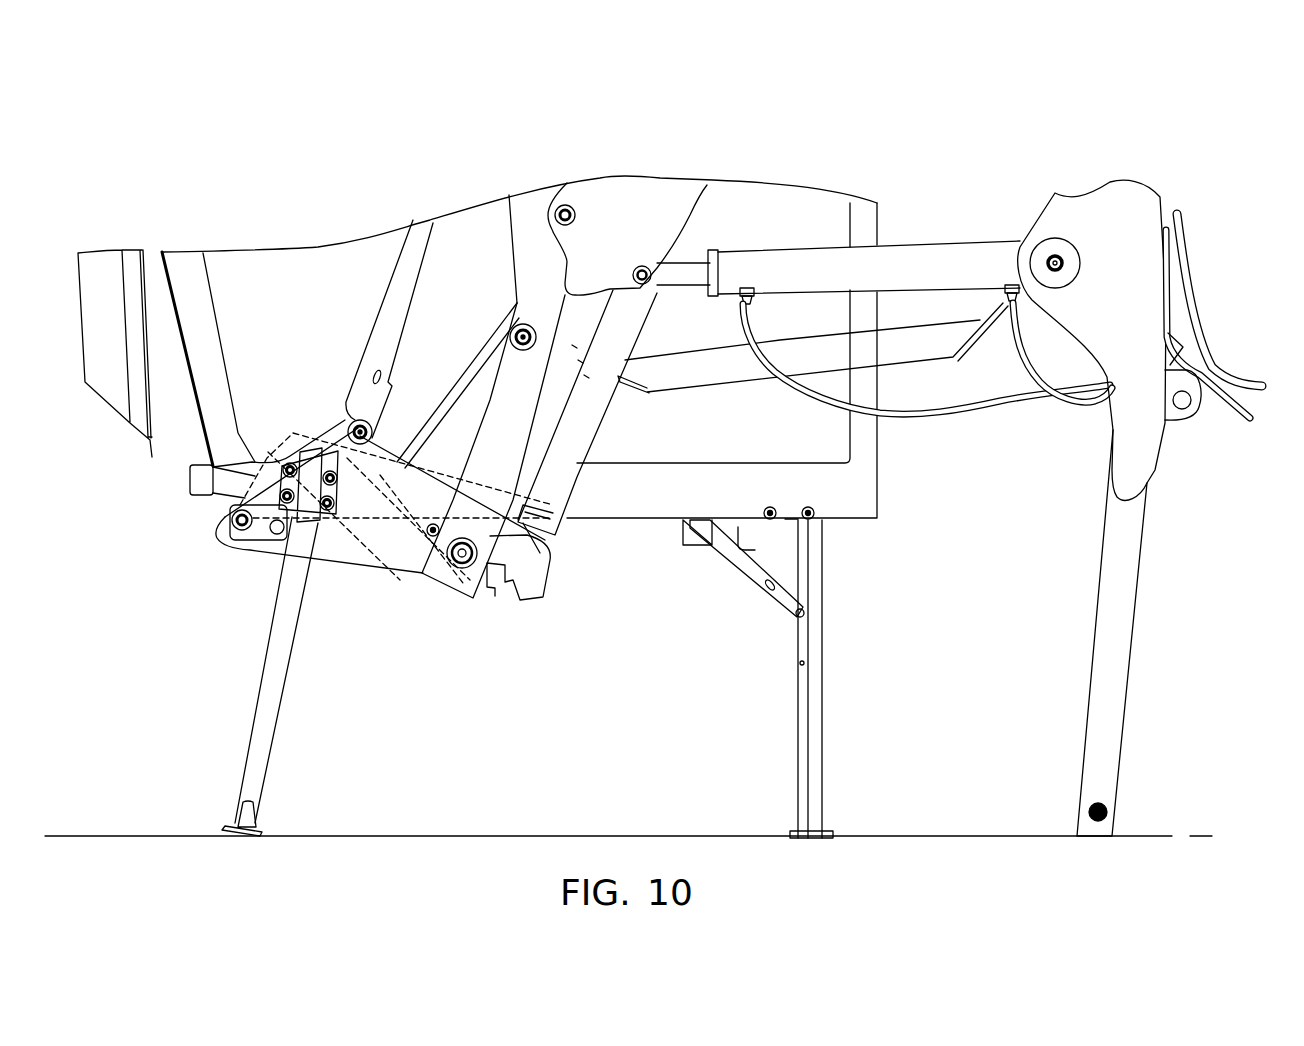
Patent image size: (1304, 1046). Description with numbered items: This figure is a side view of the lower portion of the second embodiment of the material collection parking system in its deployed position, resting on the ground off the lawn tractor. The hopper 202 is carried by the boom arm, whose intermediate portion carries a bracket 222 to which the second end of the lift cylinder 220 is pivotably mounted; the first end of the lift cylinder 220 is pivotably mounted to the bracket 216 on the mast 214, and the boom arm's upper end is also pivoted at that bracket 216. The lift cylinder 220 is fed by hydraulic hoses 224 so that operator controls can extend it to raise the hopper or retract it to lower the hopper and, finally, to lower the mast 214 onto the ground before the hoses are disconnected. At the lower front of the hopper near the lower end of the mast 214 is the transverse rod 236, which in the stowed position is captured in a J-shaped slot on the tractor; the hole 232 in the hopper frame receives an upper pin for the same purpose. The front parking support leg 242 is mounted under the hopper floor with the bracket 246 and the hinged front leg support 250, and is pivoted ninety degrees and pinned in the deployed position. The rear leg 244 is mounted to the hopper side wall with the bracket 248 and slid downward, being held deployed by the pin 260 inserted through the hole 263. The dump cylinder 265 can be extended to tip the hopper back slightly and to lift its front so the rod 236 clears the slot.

The hopper 202 is at (320, 282).
The bracket 222 is at (622, 215).
The lift cylinder 220 is at (908, 260).
The bracket 216 is at (1140, 248).
The pin 260 is at (296, 440).
The bracket 248 is at (318, 440).
The hydraulic hose 224 is at (930, 400).
The hole 232 is at (1182, 415).
The hole 263 is at (282, 568).
The rear leg 244 is at (273, 657).
The dump cylinder 265 is at (390, 533).
The front leg support 250 is at (752, 565).
The bracket 246 is at (778, 545).
The mast 214 is at (1105, 668).
The front parking support leg 242 is at (800, 770).
The lower pin or transverse rod 236 is at (1106, 812).